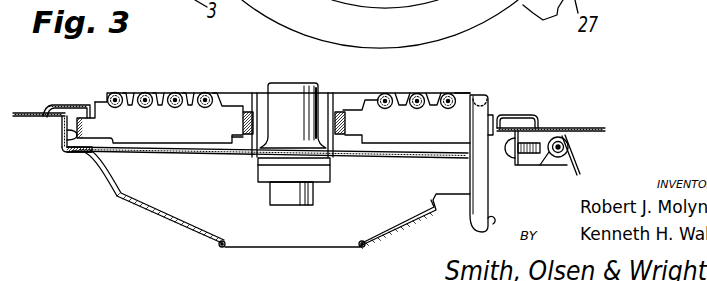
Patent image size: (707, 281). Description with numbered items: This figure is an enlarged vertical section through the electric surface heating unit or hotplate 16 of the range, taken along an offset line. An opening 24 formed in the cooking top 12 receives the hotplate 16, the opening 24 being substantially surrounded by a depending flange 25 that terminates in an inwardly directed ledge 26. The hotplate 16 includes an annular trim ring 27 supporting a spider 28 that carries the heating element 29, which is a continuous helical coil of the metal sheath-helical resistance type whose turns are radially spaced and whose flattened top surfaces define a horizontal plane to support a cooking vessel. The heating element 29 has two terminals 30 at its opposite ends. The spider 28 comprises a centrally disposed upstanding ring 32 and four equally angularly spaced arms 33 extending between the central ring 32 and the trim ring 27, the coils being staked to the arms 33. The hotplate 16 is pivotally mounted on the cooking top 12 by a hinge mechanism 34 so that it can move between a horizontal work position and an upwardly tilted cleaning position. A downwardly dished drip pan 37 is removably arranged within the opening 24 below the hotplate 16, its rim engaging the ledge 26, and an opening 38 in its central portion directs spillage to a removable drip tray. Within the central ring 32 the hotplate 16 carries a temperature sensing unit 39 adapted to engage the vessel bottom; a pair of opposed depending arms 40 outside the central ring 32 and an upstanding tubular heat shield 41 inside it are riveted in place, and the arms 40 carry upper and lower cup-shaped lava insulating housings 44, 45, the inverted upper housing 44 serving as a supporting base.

The cooking top 12 is at (28, 112).
The surface heating unit 16 is at (228, 80).
The opening 24 is at (63, 143).
The depending flange 25 is at (63, 152).
The inwardly directed ledge 26 is at (80, 155).
The annular trim ring 27 is at (53, 107).
The spider 28 is at (495, 99).
The heating element 29 is at (117, 91).
The terminals 30 is at (472, 193).
The central ring 32 is at (345, 103).
The arms 33 is at (311, 128).
The hinge mechanism 34 is at (567, 138).
The drip pan 37 is at (117, 198).
The opening 38 is at (242, 248).
The temperature sensing unit 39 is at (300, 82).
The depending arms 40 is at (255, 162).
The tubular heat shield 41 is at (340, 105).
The upper insulating housing 44 is at (330, 163).
The lower insulating housing 45 is at (313, 198).